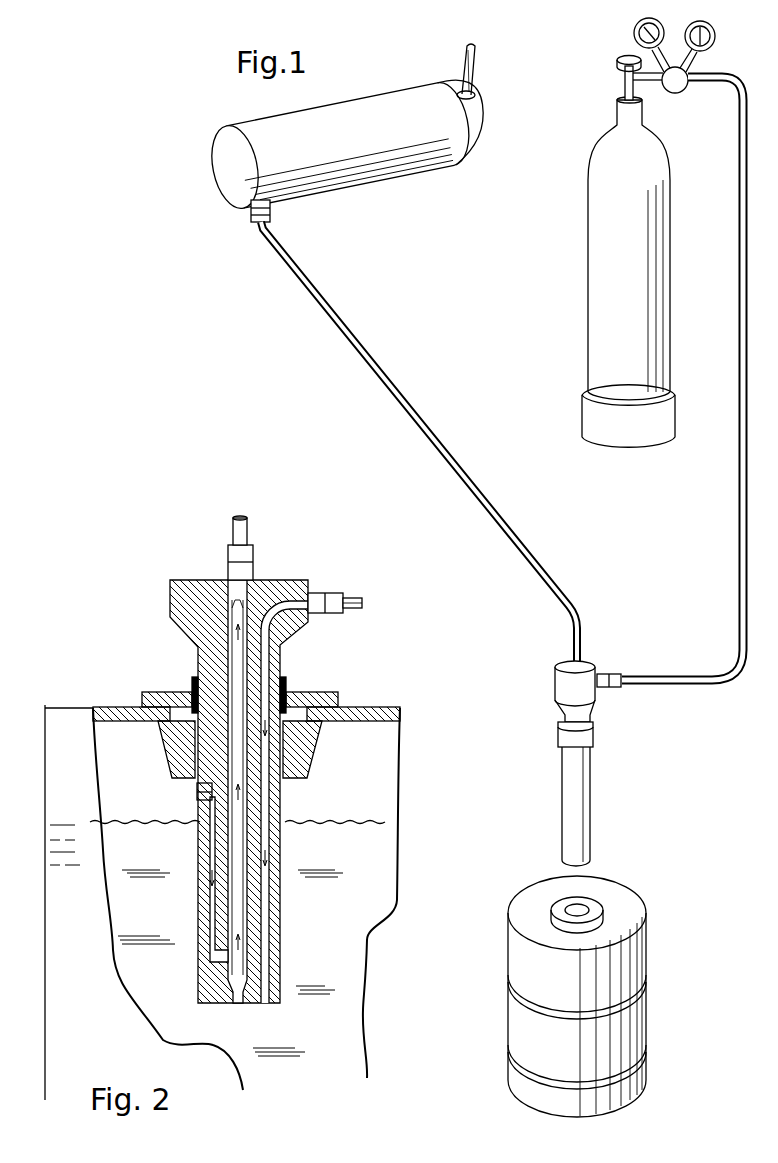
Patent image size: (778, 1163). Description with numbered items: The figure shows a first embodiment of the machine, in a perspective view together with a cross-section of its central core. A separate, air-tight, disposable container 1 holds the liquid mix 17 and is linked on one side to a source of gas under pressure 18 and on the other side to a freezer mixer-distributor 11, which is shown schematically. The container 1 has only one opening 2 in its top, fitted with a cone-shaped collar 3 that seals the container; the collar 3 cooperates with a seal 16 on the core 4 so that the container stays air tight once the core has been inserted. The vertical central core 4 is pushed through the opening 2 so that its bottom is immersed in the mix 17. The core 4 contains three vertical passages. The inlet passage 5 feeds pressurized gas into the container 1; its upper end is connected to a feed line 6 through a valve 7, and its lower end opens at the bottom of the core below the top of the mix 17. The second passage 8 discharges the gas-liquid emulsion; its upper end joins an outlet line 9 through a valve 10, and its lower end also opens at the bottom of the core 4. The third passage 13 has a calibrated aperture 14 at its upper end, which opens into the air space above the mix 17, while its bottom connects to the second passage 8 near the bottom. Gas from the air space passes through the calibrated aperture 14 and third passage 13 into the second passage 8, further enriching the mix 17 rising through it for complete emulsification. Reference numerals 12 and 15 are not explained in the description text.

In FIG. 1, the container 1 is at (640, 955).
In FIG. 1, the opening 2 is at (578, 893).
In FIG. 2, the collar 3 is at (160, 692).
In FIG. 1, the central core 4 is at (572, 800).
In FIG. 2, the central core 4 is at (274, 960).
In FIG. 2, the inlet passage 5 is at (268, 908).
In FIG. 1, the feed line 6 is at (738, 522).
In FIG. 2, the feed line 6 is at (351, 598).
In FIG. 1, the valve 7 is at (612, 688).
In FIG. 2, the valve 7 is at (320, 592).
In FIG. 2, the second passage 8 is at (240, 860).
In FIG. 1, the outlet line 9 is at (320, 300).
In FIG. 2, the outlet line 9 is at (236, 522).
In FIG. 1, the valve 10 is at (565, 660).
In FIG. 2, the valve 10 is at (232, 568).
In FIG. 1, the freezer mixer-distributor 11 is at (230, 192).
In FIG. 1, the connector 12 is at (272, 212).
In FIG. 2, the third passage 13 is at (213, 903).
In FIG. 2, the calibrated aperture 14 is at (196, 800).
In FIG. 2, the borehole 15 is at (106, 762).
In FIG. 1, the seal 16 is at (560, 735).
In FIG. 2, the seal 16 is at (288, 686).
In FIG. 2, the mix 17 is at (280, 1045).
In FIG. 1, the source of gas under pressure 18 is at (600, 250).